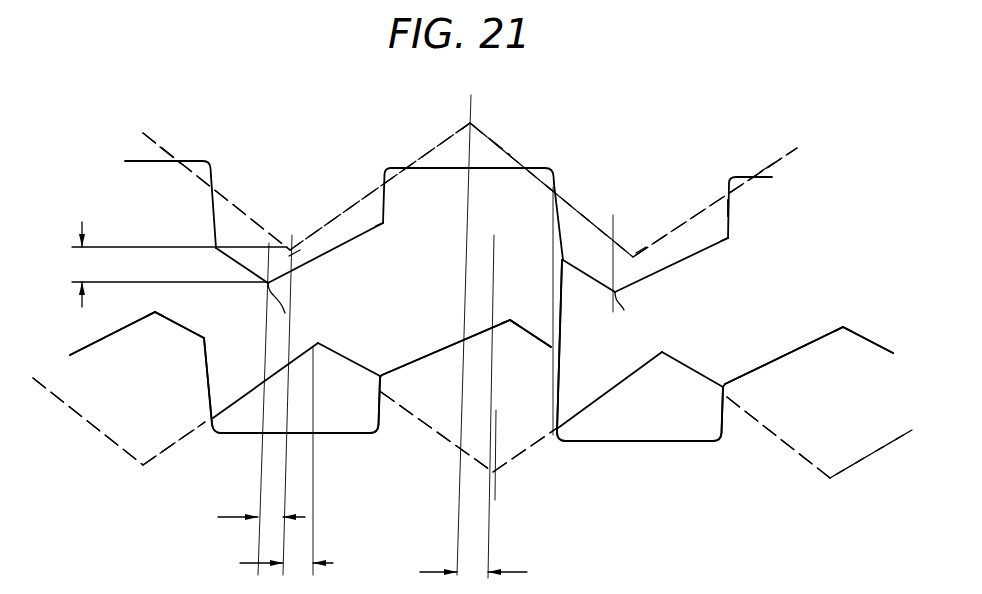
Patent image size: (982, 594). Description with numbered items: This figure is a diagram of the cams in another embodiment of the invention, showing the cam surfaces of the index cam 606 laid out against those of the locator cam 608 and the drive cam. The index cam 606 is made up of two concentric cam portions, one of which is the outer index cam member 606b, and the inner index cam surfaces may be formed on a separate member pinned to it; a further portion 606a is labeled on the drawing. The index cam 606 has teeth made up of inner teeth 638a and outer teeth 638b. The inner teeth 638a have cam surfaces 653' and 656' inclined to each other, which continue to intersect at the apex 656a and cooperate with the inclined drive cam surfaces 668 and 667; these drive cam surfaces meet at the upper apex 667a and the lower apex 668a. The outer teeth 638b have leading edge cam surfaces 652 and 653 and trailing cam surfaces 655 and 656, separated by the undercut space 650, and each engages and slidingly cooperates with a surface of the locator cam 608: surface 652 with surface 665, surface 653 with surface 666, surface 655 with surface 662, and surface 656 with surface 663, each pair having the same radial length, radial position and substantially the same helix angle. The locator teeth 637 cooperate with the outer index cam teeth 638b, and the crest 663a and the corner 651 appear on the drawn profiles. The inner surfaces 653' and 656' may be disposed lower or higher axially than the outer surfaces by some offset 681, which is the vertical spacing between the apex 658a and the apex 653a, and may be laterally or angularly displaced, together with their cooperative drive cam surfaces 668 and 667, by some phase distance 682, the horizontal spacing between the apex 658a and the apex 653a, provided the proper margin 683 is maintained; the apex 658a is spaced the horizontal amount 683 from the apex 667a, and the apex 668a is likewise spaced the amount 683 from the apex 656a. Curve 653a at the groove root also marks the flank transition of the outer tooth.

The index cam 606 is at (806, 151).
The workpiece thread flank 606a is at (770, 166).
The outer index cam member 606b is at (722, 208).
The locator cam 608 is at (688, 474).
The locator teeth 637 is at (162, 395).
The inner teeth 638a is at (310, 205).
The outer teeth 638b is at (328, 236).
The undercut space 650 is at (478, 194).
The crest corner 651 is at (207, 192).
The cam surface 652 is at (213, 225).
The cam surface 653 is at (379, 286).
The inner cam surface 653' is at (362, 140).
The apex 653a is at (285, 312).
The cam surface 655 is at (385, 207).
The cam surface 656 is at (498, 263).
The inner cam surface 656' is at (529, 197).
The apex 656a is at (470, 123).
The apex 658a is at (292, 252).
The cam surface 662 is at (372, 433).
The cam surface 663 is at (108, 333).
The tooth crest 663a is at (157, 311).
The cam surface 665 is at (553, 380).
The cam surface 666 is at (188, 335).
The inclined cam surface 667 is at (236, 400).
The upper apex 667a is at (321, 345).
The inclined cam surface 668 is at (105, 440).
The lower apex 668a is at (143, 465).
The offset 681 is at (177, 264).
The phase distance 682 is at (268, 518).
The margin 683 is at (292, 567).